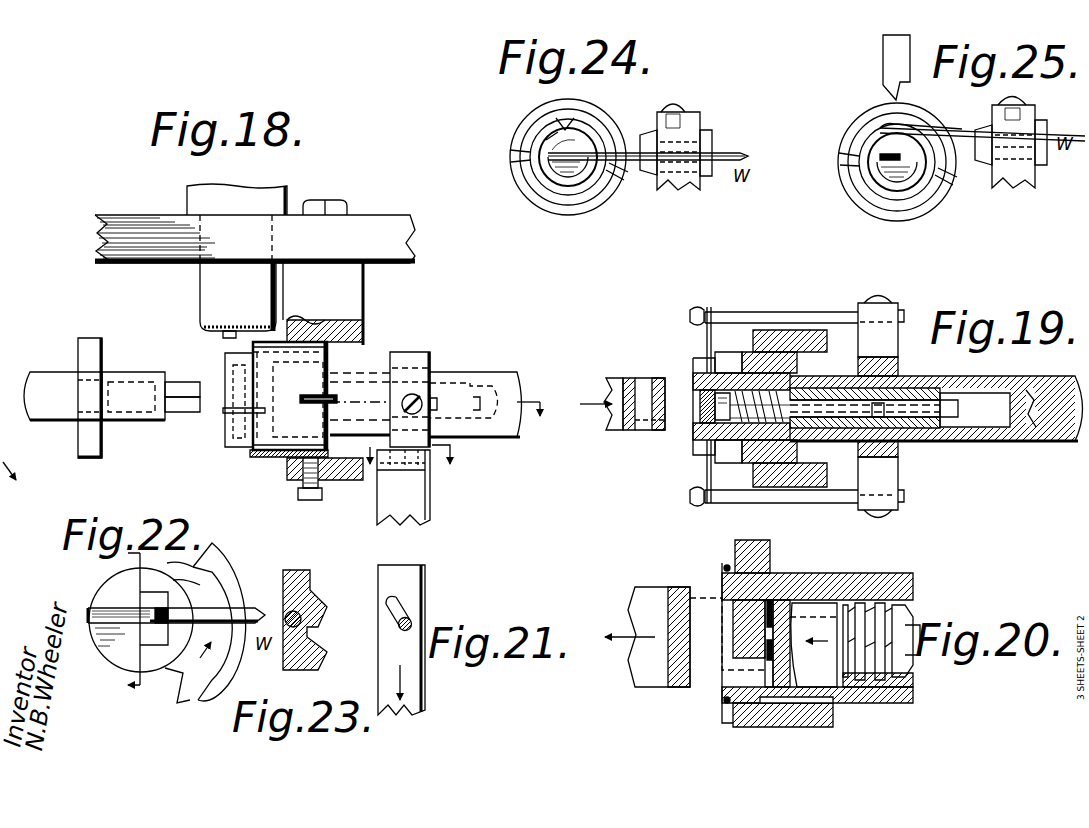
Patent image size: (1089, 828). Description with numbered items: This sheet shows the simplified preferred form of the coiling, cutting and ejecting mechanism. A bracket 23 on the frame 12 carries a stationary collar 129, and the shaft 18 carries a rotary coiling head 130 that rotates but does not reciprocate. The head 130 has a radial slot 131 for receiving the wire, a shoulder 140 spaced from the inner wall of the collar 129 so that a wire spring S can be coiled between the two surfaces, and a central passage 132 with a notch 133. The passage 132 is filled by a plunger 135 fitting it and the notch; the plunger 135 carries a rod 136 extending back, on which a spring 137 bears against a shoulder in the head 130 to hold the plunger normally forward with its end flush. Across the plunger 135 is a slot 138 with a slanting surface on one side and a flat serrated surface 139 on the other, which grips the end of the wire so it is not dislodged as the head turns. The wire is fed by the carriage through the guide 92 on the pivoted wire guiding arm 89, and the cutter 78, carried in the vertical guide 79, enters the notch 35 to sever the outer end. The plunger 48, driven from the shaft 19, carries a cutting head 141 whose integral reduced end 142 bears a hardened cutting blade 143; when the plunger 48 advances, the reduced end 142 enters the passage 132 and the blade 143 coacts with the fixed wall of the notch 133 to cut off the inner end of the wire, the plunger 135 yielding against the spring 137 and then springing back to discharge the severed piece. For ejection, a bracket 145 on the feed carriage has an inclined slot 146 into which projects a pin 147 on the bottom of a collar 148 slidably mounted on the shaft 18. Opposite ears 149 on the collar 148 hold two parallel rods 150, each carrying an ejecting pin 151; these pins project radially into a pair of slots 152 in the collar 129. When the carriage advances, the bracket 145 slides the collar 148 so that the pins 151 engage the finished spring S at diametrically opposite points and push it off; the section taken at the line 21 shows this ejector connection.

In FIG. 18, the frame 12 is at (388, 222).
In FIG. 18, the shaft 18 is at (503, 380).
In FIG. 19, the shaft 18 is at (1048, 440).
In FIG. 18, the shaft 19 is at (136, 398).
In FIG. 18, the section line arrows 21 is at (414, 449).
In FIG. 18, the bracket 23 is at (358, 304).
In FIG. 22, the bracket 23 is at (144, 625).
In FIG. 24, the notch 35 is at (566, 126).
In FIG. 18, the plunger 48 is at (44, 378).
In FIG. 18, the cutter 78 is at (224, 339).
In FIG. 25, the cutter 78 is at (883, 52).
In FIG. 18, the vertical guide 79 is at (187, 200).
In FIG. 24, the wire guiding arm 89 is at (691, 190).
In FIG. 25, the wire guiding arm 89 is at (1022, 178).
In FIG. 24, the guide 92 is at (709, 136).
In FIG. 25, the guide 92 is at (1042, 126).
In FIG. 18, the stationary collar 129 is at (272, 457).
In FIG. 24, the stationary collar 129 is at (521, 170).
In FIG. 25, the stationary collar 129 is at (920, 212).
In FIG. 19, the stationary collar 129 is at (745, 419).
In FIG. 20, the stationary collar 129 is at (770, 727).
In FIG. 18, the rotary coiling head 130 is at (300, 340).
In FIG. 24, the rotary coiling head 130 is at (545, 176).
In FIG. 25, the rotary coiling head 130 is at (897, 162).
In FIG. 19, the rotary coiling head 130 is at (786, 463).
In FIG. 20, the rotary coiling head 130 is at (848, 570).
In FIG. 18, the radial slot 131 is at (233, 400).
In FIG. 22, the radial slot 131 is at (262, 586).
In FIG. 24, the radial slot 131 is at (616, 148).
In FIG. 25, the radial slot 131 is at (982, 133).
In FIG. 22, the central passage 132 is at (180, 700).
In FIG. 22, the notch 133 is at (212, 566).
In FIG. 22, the plunger 135 is at (104, 645).
In FIG. 23, the plunger 135 is at (310, 583).
In FIG. 24, the plunger 135 is at (566, 172).
In FIG. 25, the plunger 135 is at (893, 178).
In FIG. 19, the plunger 135 is at (698, 390).
In FIG. 20, the plunger 135 is at (800, 610).
In FIG. 18, the rod 136 is at (491, 422).
In FIG. 19, the rod 136 is at (950, 410).
In FIG. 20, the rod 136 is at (922, 600).
In FIG. 19, the spring 137 is at (760, 405).
In FIG. 20, the spring 137 is at (886, 625).
In FIG. 22, the slot 138 is at (96, 626).
In FIG. 23, the slot 138 is at (300, 632).
In FIG. 25, the slot 138 is at (872, 190).
In FIG. 20, the slot 138 is at (733, 618).
In FIG. 22, the serrated surface 139 is at (152, 612).
In FIG. 18, the shoulder 140 is at (228, 380).
In FIG. 24, the shoulder 140 is at (596, 130).
In FIG. 18, the cutting head 141 is at (147, 438).
In FIG. 19, the cutting head 141 is at (612, 384).
In FIG. 20, the cutting head 141 is at (640, 595).
In FIG. 18, the reduced end 142 is at (193, 412).
In FIG. 19, the reduced end 142 is at (646, 432).
In FIG. 20, the reduced end 142 is at (734, 648).
In FIG. 18, the cutting blade 143 is at (190, 386).
In FIG. 19, the cutting blade 143 is at (656, 384).
In FIG. 20, the cutting blade 143 is at (702, 682).
In FIG. 18, the bracket 145 is at (430, 512).
In FIG. 21, the bracket 145 is at (428, 707).
In FIG. 21, the inclined slot 146 is at (392, 601).
In FIG. 18, the pin 147 is at (425, 480).
In FIG. 21, the pin 147 is at (411, 621).
In FIG. 19, the pin 147 is at (880, 462).
In FIG. 18, the collar 148 is at (415, 360).
In FIG. 19, the collar 148 is at (898, 367).
In FIG. 18, the ears 149 is at (422, 392).
In FIG. 19, the ears 149 is at (890, 308).
In FIG. 18, the parallel rods 150 is at (289, 399).
In FIG. 19, the parallel rods 150 is at (825, 323).
In FIG. 19, the ejecting pin 151 is at (707, 341).
In FIG. 18, the slots 152 is at (233, 414).
In FIG. 24, the slots 152 is at (521, 151).
In FIG. 25, the slots 152 is at (849, 150).
In FIG. 25, the wire spring S is at (932, 202).
In FIG. 19, the wire spring S is at (694, 436).
In FIG. 20, the wire spring S is at (726, 565).